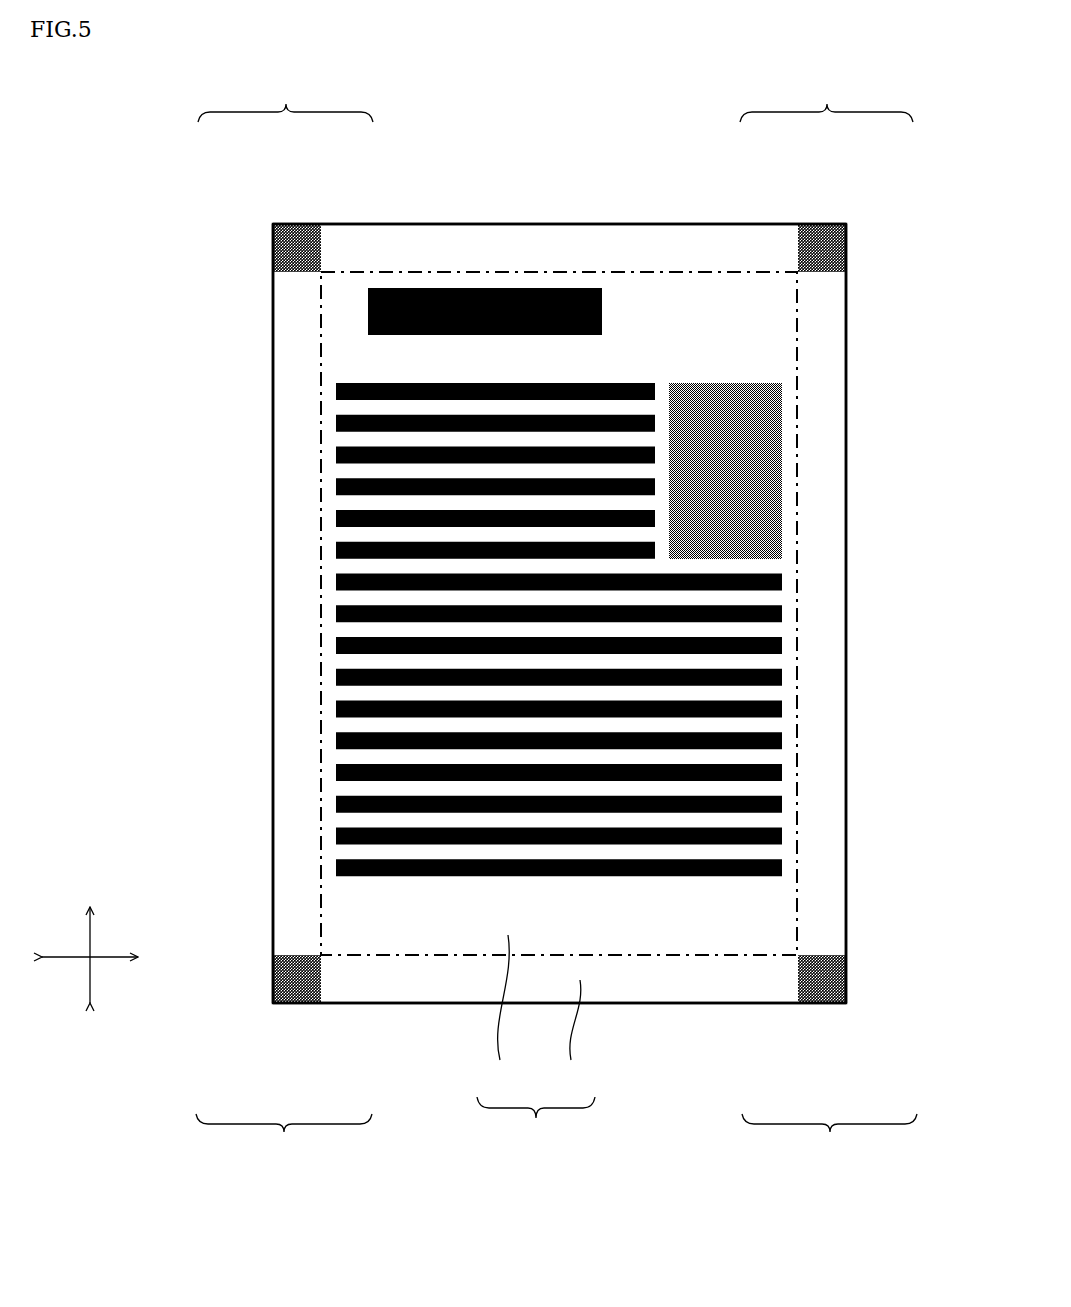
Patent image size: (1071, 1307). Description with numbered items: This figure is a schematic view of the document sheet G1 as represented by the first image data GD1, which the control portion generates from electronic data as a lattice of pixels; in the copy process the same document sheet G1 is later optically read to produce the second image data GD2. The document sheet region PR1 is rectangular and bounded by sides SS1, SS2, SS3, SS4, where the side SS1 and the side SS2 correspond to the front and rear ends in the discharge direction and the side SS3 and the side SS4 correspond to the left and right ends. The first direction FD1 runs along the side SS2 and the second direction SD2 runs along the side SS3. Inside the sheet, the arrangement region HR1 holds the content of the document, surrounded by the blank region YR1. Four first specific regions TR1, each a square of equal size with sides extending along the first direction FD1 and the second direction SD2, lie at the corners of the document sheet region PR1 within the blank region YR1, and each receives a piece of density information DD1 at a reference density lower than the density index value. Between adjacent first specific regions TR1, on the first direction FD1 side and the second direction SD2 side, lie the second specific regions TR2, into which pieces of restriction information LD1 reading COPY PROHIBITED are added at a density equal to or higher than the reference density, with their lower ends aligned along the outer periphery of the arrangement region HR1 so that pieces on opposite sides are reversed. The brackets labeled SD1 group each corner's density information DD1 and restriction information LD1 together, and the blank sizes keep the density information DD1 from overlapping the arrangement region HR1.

The document sheet G1 is at (536, 165).
The first image data GD1 is at (559, 582).
The second image data GD2 is at (725, 471).
The side SS1 is at (489, 224).
The side SS2 is at (620, 1003).
The side SS3 is at (273, 512).
The side SS4 is at (846, 735).
The first specific region TR1 is at (827, 1045).
The second specific region TR2 is at (621, 247).
The density information DD1 is at (297, 232).
The restriction information LD1 is at (277, 290).
The security data SD1 is at (556, 618).
The arrangement region HR1 is at (501, 1014).
The blank region YR1 is at (570, 1036).
The document sheet region PR1 is at (536, 1128).
The second direction SD2 is at (88, 942).
The first direction FD1 is at (118, 958).